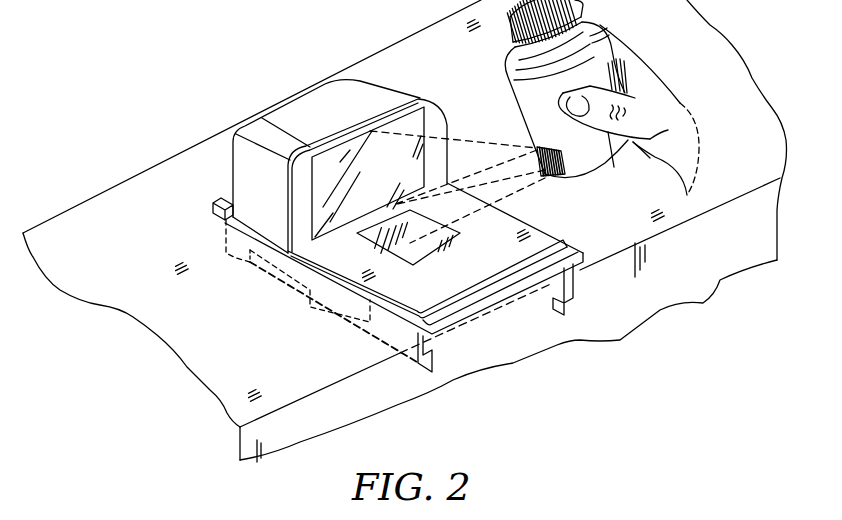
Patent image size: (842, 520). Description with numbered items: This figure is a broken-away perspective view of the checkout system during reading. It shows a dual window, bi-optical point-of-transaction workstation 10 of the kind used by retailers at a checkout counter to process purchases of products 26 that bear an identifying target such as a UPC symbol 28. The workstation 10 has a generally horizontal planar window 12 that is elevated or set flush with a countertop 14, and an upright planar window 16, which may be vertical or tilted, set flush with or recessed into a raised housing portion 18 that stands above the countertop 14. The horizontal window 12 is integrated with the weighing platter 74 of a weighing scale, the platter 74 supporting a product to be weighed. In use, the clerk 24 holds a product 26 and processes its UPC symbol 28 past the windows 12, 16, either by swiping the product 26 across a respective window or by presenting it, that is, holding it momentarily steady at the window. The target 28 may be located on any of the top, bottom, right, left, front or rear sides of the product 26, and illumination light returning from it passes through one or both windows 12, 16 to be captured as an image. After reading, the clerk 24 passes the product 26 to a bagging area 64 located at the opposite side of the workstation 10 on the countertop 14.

The point-of-transaction workstation 10 is at (408, 79).
The horizontal planar window 12 is at (423, 253).
The countertop 14 is at (600, 248).
The upright planar window 16 is at (345, 147).
The raised housing portion 18 is at (435, 117).
The clerk 24 is at (682, 107).
The product 26 is at (600, 53).
The UPC symbol 28 is at (570, 162).
The bagging area 64 is at (182, 325).
The weighing platter 74 is at (330, 255).